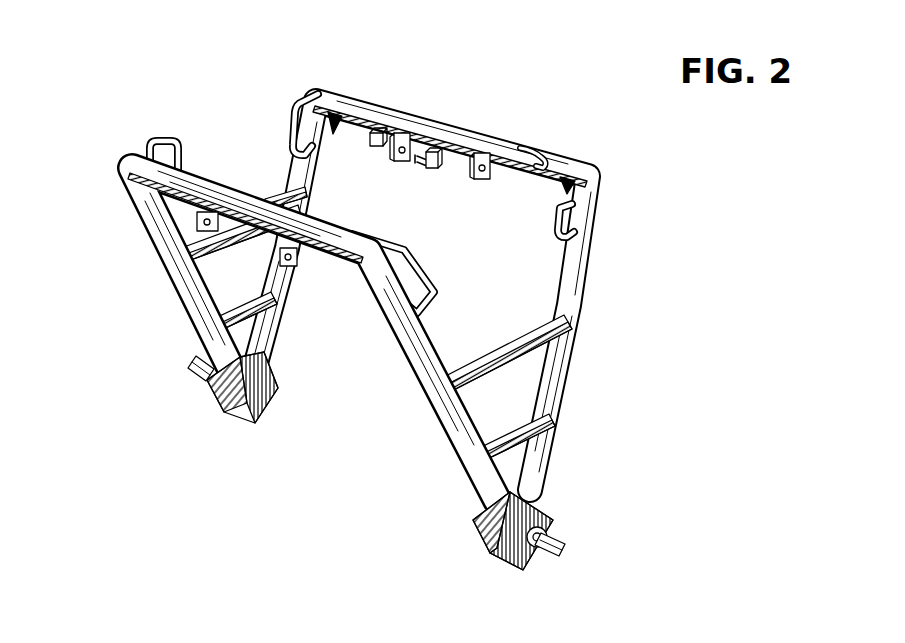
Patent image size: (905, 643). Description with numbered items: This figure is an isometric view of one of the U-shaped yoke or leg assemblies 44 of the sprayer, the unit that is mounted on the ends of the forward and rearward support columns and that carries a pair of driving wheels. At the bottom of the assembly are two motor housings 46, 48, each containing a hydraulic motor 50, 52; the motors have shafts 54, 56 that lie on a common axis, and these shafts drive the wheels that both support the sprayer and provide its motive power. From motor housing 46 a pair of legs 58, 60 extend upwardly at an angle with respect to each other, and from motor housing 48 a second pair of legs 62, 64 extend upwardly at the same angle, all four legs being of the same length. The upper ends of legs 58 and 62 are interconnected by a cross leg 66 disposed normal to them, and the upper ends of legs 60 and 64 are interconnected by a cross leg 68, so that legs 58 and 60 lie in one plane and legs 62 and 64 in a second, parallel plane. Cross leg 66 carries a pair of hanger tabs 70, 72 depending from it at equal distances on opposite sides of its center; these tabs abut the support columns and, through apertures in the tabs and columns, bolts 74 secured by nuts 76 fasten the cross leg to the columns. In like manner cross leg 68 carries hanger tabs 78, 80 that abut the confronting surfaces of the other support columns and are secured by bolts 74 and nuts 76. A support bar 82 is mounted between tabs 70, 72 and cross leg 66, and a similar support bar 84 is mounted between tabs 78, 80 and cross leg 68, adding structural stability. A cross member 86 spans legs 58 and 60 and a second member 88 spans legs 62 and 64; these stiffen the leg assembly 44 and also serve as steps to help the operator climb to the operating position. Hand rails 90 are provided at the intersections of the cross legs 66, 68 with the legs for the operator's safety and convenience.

The leg assembly 44 is at (580, 302).
The motor housing 46 is at (490, 540).
The motor housing 48 is at (215, 402).
The hydraulic motor 50 is at (500, 560).
The hydraulic motor 52 is at (262, 398).
The shaft 54 is at (560, 545).
The shaft 56 is at (185, 362).
The leg 58 is at (553, 388).
The leg 60 is at (425, 375).
The leg 62 is at (286, 297).
The leg 64 is at (190, 285).
The cross leg 66 is at (403, 110).
The cross leg 68 is at (207, 190).
The hanger tab 70 is at (490, 180).
The hanger tab 72 is at (400, 161).
The bolt 74 is at (433, 170).
The nut 76 is at (365, 145).
The hanger tab 78 is at (294, 266).
The hanger tab 80 is at (200, 222).
The support bar 82 is at (497, 160).
The support bar 84 is at (255, 244).
The cross member 86 is at (500, 350).
The second member 88 is at (288, 196).
The hand rail 90 is at (298, 108).